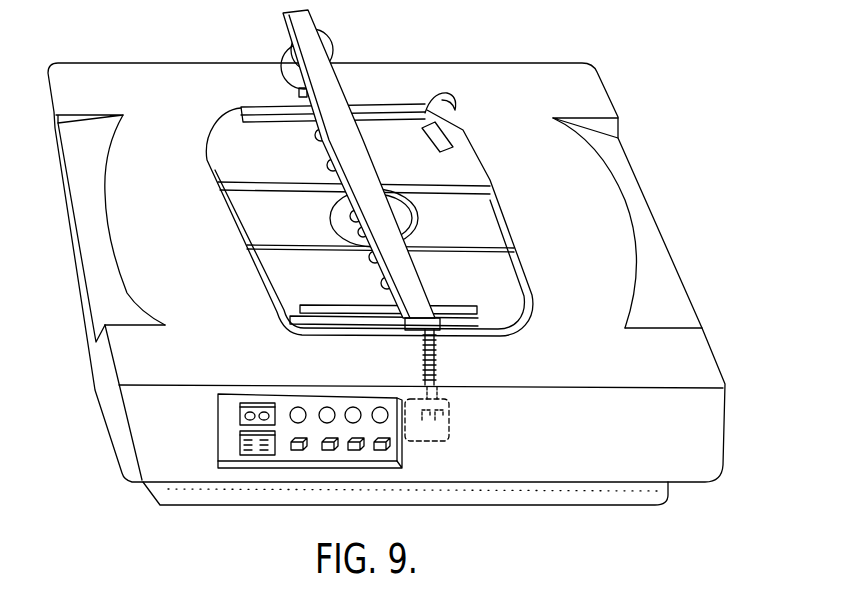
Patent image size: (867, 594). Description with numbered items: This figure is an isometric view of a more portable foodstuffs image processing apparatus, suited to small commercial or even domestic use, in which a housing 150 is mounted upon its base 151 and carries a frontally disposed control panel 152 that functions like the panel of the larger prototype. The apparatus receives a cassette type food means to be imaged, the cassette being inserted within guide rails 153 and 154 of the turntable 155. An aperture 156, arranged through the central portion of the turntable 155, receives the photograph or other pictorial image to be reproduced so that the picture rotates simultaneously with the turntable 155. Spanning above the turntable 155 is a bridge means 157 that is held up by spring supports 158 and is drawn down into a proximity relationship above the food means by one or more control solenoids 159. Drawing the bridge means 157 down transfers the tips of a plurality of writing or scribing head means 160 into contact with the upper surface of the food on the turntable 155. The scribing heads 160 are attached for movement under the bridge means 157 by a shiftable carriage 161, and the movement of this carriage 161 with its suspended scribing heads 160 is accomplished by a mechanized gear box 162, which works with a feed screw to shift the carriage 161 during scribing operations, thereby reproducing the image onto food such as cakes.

The housing 150 is at (705, 438).
The base 151 is at (657, 493).
The control panel 152 is at (227, 417).
The guide rail 153 is at (258, 106).
The guide rail 154 is at (315, 312).
The turntable 155 is at (258, 273).
The aperture 156 is at (414, 216).
The bridge means 157 is at (328, 78).
The spring supports 158 is at (436, 354).
The control solenoid 159 is at (452, 432).
The scribing head means 160 is at (320, 138).
The shiftable carriage 161 is at (335, 193).
The mechanized gear box 162 is at (283, 60).